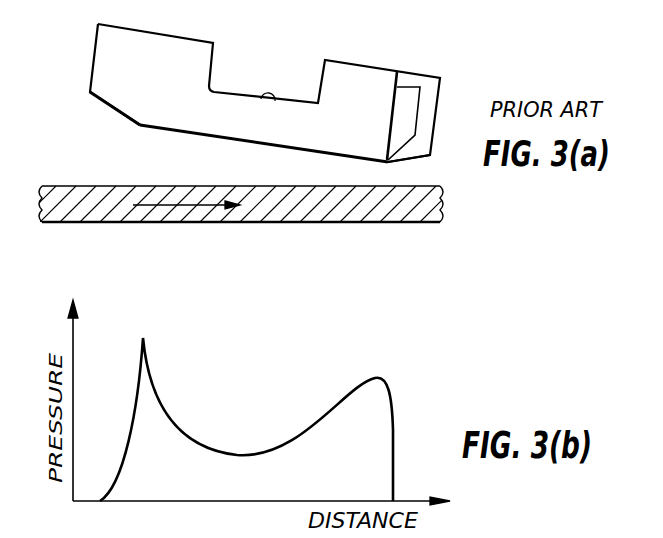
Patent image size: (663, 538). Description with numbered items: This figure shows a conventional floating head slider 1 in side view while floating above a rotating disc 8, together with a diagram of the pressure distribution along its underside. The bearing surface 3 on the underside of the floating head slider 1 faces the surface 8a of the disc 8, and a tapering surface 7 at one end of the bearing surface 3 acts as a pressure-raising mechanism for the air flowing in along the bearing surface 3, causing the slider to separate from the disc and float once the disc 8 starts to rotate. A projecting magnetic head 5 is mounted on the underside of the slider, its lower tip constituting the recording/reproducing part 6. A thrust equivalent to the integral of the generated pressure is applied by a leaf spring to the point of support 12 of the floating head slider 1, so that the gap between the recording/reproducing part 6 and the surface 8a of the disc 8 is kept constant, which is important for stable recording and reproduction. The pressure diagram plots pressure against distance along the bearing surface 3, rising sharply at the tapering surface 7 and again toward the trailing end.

The floating head slider 1 is at (202, 40).
The bearing surface 3 is at (173, 133).
The projecting magnetic head 5 is at (434, 95).
The recording/reproducing part 6 is at (392, 163).
The tapering surface 7 is at (110, 108).
The disc 8 is at (350, 212).
The surface of the disc 8a is at (253, 187).
The point of support 12 is at (270, 90).